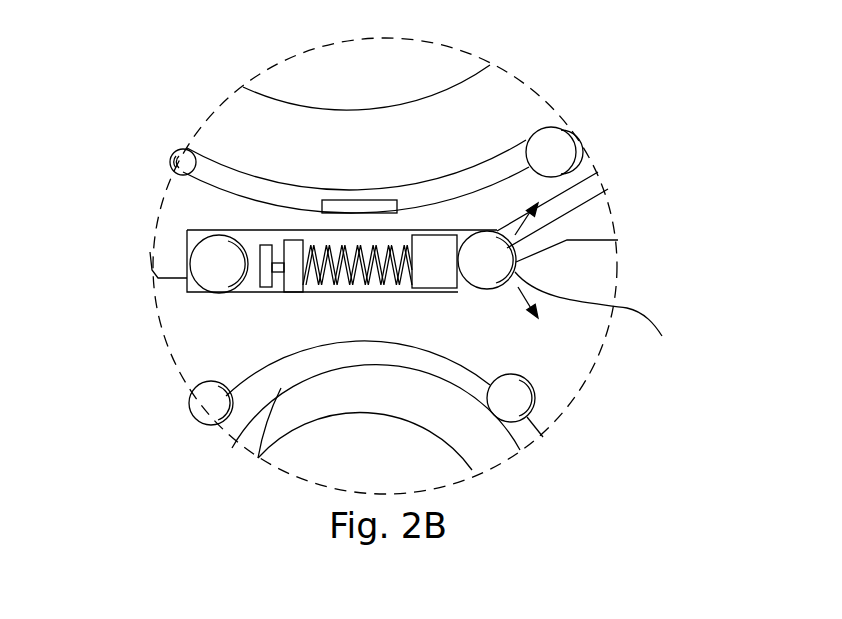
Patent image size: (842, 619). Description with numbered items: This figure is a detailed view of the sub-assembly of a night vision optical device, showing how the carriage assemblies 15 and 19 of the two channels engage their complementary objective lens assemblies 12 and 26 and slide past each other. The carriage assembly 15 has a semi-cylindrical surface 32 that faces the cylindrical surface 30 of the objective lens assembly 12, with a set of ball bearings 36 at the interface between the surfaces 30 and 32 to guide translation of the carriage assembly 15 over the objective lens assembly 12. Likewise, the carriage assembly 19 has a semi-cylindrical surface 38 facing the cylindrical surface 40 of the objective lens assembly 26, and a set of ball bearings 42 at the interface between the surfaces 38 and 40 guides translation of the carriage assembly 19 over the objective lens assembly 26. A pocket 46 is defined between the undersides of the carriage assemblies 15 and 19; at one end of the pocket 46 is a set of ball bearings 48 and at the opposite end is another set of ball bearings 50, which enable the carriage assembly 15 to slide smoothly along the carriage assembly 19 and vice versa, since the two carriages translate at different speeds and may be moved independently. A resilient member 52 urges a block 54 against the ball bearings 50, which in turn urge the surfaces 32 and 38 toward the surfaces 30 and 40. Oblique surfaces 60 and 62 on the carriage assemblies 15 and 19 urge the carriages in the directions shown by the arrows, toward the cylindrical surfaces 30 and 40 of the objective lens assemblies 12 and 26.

The objective lens assembly 12 is at (357, 469).
The carriage assembly 15 is at (578, 176).
The carriage assembly 19 is at (604, 266).
The objective lens assembly 26 is at (338, 75).
The cylindrical surface 30 is at (190, 182).
The semi-cylindrical surface 32 is at (459, 193).
The ball bearings 36 is at (207, 147).
The semi-cylindrical surface 38 is at (258, 368).
The cylindrical surface 40 is at (232, 448).
The ball bearings 42 is at (207, 408).
The pocket 46 is at (256, 244).
The ball bearings 48 is at (188, 270).
The ball bearings 50 is at (474, 290).
The resilient member 52 is at (343, 274).
The block 54 is at (422, 272).
The oblique surface 60 is at (592, 177).
The oblique surface 62 is at (606, 317).